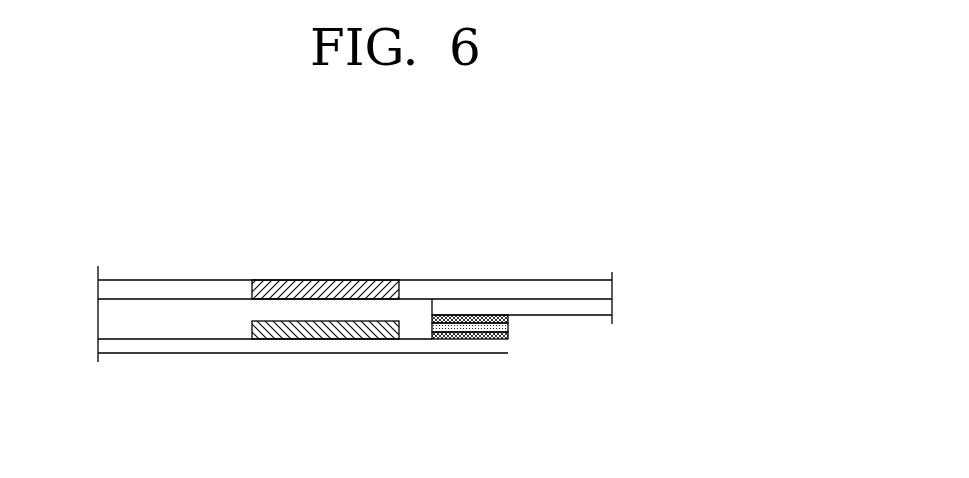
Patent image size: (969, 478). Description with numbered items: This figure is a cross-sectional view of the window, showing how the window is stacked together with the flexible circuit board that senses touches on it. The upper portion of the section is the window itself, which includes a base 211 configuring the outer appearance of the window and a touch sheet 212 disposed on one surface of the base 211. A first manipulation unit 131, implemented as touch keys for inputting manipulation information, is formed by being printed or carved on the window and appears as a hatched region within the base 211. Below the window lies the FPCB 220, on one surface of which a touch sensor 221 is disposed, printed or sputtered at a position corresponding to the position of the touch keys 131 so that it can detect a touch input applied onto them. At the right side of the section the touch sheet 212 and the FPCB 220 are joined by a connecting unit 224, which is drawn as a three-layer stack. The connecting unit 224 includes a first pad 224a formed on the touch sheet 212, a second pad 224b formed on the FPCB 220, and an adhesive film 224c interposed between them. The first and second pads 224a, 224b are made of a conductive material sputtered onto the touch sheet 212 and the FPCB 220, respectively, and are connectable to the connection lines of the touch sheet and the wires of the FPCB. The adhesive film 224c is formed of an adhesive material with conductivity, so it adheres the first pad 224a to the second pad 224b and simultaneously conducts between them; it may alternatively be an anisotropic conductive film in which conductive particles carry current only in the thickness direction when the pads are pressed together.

The first manipulation unit 131 is at (322, 282).
The base 211 is at (539, 290).
The touch sheet 212 is at (587, 307).
The FPCB 220 is at (191, 346).
The touch sensor 221 is at (323, 336).
The connecting unit 224 is at (470, 379).
The first pad 224a is at (448, 337).
The second pad 224b is at (465, 331).
The adhesive film 224c is at (488, 371).